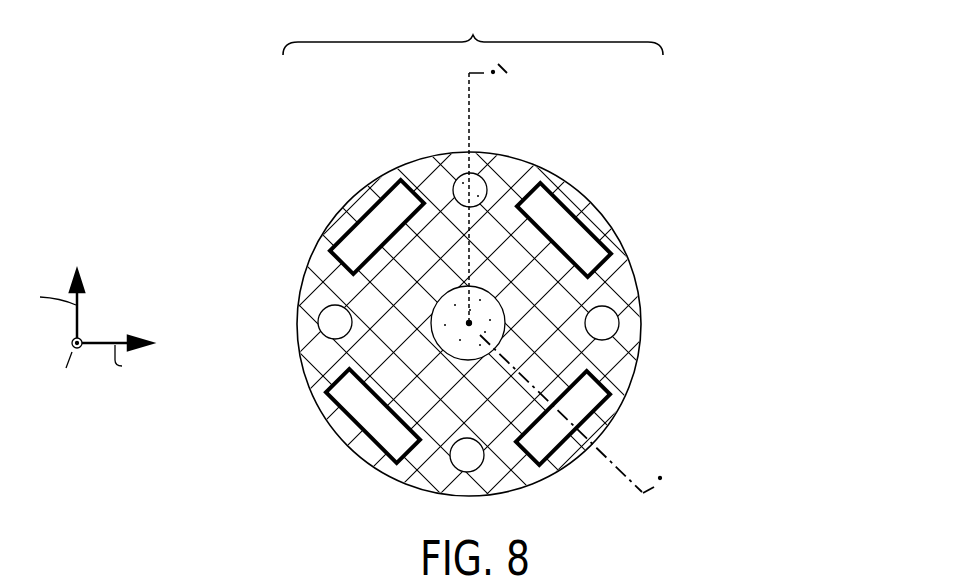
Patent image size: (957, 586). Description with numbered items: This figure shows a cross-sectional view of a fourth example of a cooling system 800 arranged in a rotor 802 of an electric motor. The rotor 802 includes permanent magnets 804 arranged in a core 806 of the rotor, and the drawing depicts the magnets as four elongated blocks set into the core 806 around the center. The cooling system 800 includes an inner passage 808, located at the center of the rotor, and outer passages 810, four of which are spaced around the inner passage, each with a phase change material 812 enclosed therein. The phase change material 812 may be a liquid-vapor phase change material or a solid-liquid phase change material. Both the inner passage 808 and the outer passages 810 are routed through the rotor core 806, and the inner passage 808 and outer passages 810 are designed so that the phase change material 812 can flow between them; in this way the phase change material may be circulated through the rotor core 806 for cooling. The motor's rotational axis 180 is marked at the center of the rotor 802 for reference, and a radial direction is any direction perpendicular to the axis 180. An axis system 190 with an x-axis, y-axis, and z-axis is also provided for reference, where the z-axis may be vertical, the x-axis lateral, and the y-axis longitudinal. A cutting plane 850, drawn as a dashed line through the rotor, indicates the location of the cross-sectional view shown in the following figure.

The cooling system 800 is at (381, 142).
The rotor 802 is at (473, 31).
The permanent magnets 804 is at (575, 236).
The core 806 is at (563, 334).
The inner passage 808 is at (436, 359).
The outer passages 810 is at (462, 176).
The phase change material 812 is at (480, 190).
The rotational axis 180 is at (462, 323).
The cutting plane 850 is at (466, 86).
The axis system 190 is at (119, 305).